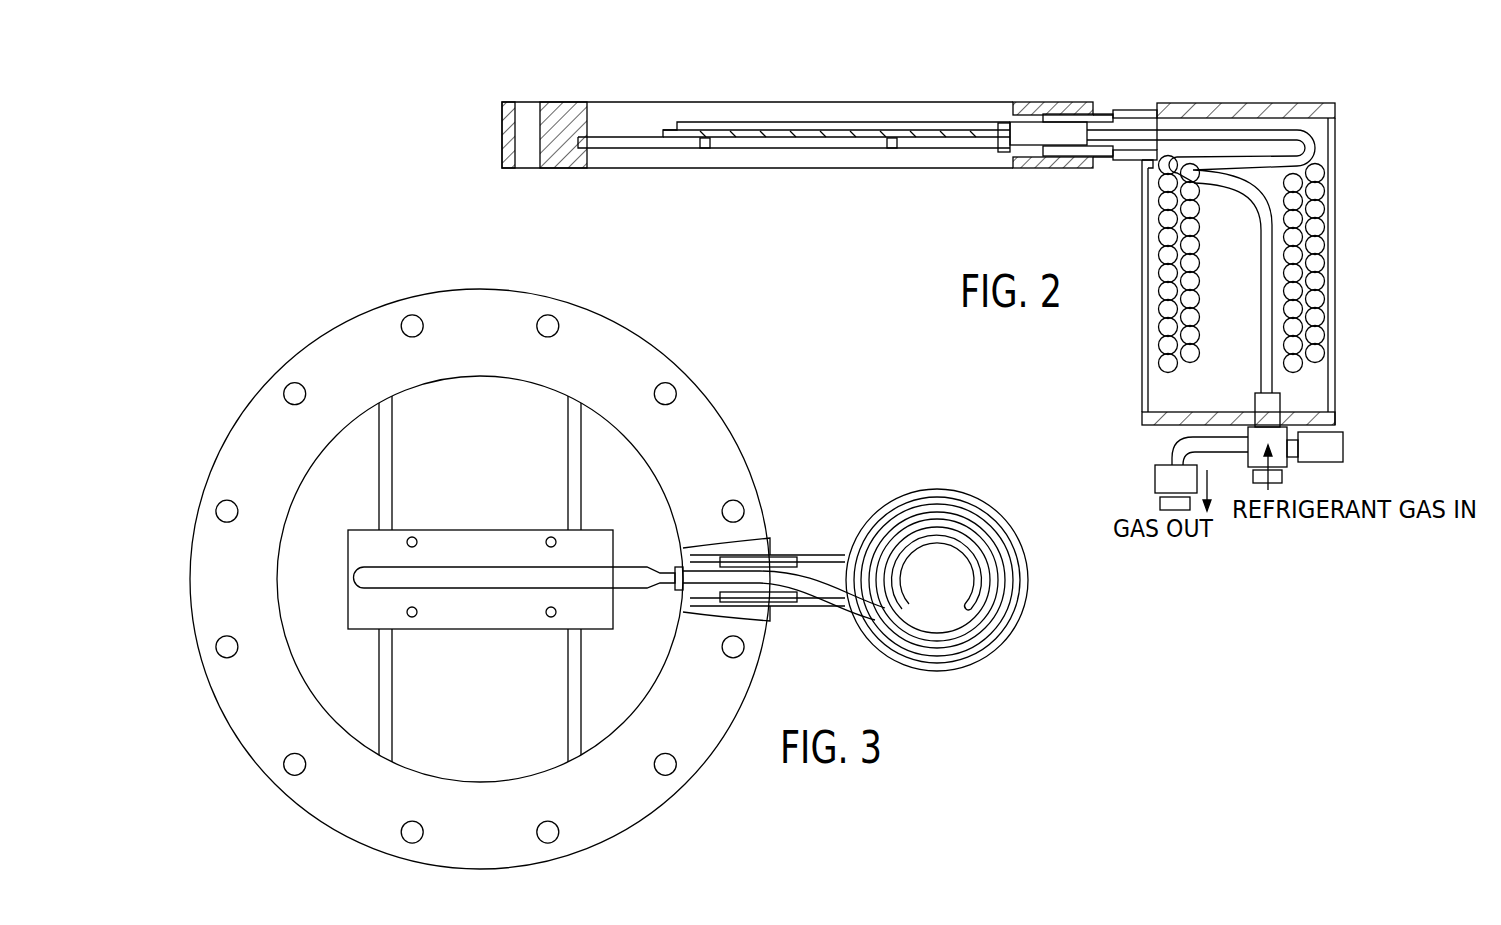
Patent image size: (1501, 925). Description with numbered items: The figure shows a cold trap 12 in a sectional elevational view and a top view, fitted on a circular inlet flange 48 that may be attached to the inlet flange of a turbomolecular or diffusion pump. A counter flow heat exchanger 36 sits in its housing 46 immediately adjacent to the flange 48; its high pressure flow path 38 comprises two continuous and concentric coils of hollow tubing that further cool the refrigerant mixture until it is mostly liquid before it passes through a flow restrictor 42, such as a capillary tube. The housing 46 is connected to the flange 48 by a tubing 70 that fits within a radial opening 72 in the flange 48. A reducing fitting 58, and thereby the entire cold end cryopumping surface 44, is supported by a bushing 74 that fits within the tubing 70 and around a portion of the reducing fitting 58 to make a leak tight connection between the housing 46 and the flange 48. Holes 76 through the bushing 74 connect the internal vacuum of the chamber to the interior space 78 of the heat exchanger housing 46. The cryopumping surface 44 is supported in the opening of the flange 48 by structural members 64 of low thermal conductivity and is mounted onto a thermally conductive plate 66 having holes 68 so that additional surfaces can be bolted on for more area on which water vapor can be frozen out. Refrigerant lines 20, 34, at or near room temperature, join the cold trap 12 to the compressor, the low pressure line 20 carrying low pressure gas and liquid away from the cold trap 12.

In FIG. 2, the cold trap 12 is at (1340, 80).
In FIG. 2, the flange 48 is at (522, 130).
In FIG. 3, the flange 48 is at (243, 697).
In FIG. 2, the flow restrictor 42 is at (794, 164).
In FIG. 2, the cryopumping surface 44 is at (748, 140).
In FIG. 3, the cryopumping surface 44 is at (608, 574).
In FIG. 2, the structural members 64 is at (697, 150).
In FIG. 3, the structural members 64 is at (393, 458).
In FIG. 2, the radial opening 72 is at (1010, 112).
In FIG. 3, the radial opening 72 is at (693, 540).
In FIG. 2, the holes 76 is at (1082, 115).
In FIG. 2, the reducing fitting 58 is at (1028, 145).
In FIG. 2, the bushing 74 is at (1107, 123).
In FIG. 2, the tubing 70 is at (1105, 168).
In FIG. 2, the high pressure flow path 38 is at (1233, 133).
In FIG. 3, the high pressure flow path 38 is at (937, 510).
In FIG. 2, the housing 46 is at (1337, 250).
In FIG. 3, the housing 46 is at (995, 506).
In FIG. 2, the counter flow heat exchanger 36 is at (1150, 218).
In FIG. 2, the interior space 78 is at (1233, 394).
In FIG. 2, the refrigerant line 34 is at (1293, 463).
In FIG. 2, the low pressure line 20 is at (1180, 450).
In FIG. 3, the thermally conductive plate 66 is at (470, 550).
In FIG. 3, the holes 68 is at (550, 618).